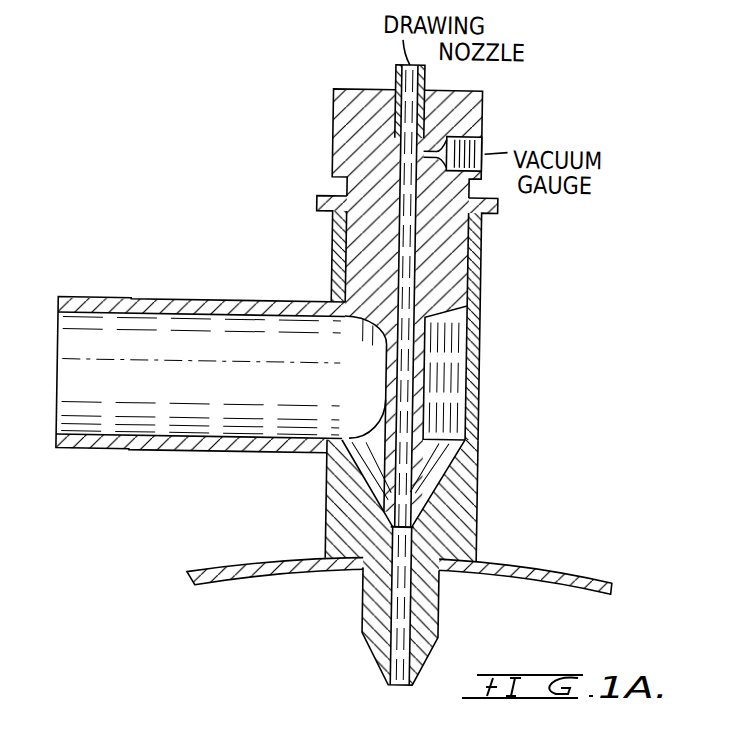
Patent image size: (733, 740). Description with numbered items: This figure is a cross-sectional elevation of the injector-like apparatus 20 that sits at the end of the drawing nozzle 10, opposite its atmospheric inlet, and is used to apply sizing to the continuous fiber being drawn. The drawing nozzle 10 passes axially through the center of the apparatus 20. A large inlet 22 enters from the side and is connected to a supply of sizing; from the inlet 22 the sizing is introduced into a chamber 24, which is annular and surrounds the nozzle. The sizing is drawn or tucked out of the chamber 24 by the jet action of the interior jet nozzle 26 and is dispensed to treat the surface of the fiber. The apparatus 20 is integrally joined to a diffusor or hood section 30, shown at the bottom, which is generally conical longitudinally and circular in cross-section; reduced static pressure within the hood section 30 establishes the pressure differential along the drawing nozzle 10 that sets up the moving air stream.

The drawing nozzle 10 is at (389, 80).
The apparatus 20 is at (487, 322).
The inlet 22 is at (61, 345).
The chamber 24 is at (448, 417).
The interior jet nozzle 26 is at (395, 527).
The diffusor or hood section 30 is at (500, 564).